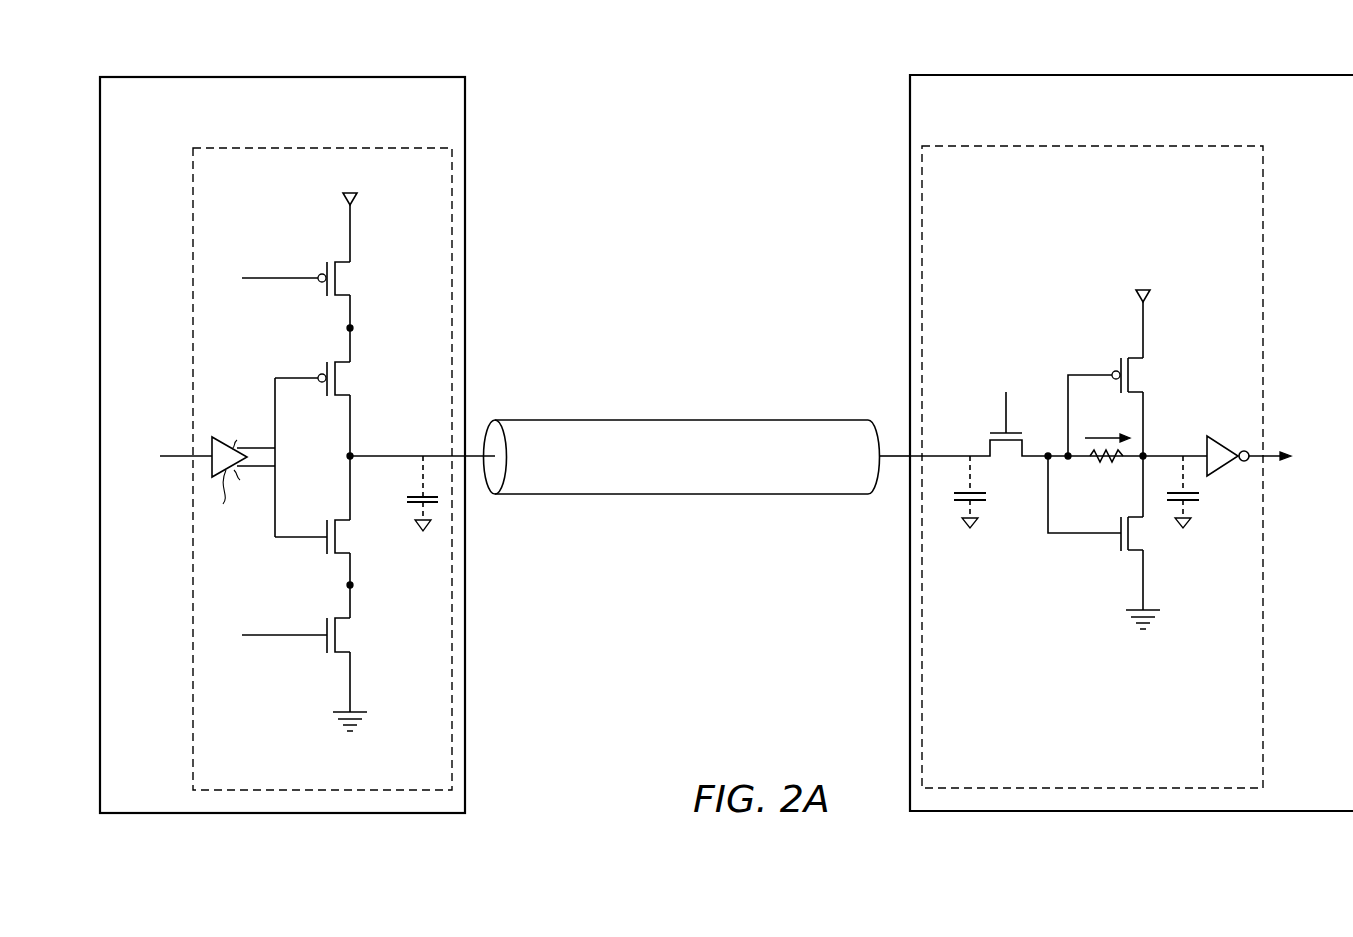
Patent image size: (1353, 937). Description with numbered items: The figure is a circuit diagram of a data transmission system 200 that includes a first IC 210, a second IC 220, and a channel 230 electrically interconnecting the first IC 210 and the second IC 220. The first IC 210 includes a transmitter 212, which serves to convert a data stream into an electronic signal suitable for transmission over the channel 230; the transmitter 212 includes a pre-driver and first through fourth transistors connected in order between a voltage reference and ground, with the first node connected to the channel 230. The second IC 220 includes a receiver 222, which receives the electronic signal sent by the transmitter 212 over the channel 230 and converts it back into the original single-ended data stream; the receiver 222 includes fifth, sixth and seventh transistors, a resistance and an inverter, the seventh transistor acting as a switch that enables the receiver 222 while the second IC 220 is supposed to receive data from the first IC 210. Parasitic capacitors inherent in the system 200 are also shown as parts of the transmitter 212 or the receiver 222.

The data transmission system 200 is at (757, 178).
The first IC 210 is at (267, 77).
The transmitter 212 is at (250, 148).
The second IC 220 is at (1145, 75).
The receiver 222 is at (1128, 145).
The channel 230 is at (667, 418).